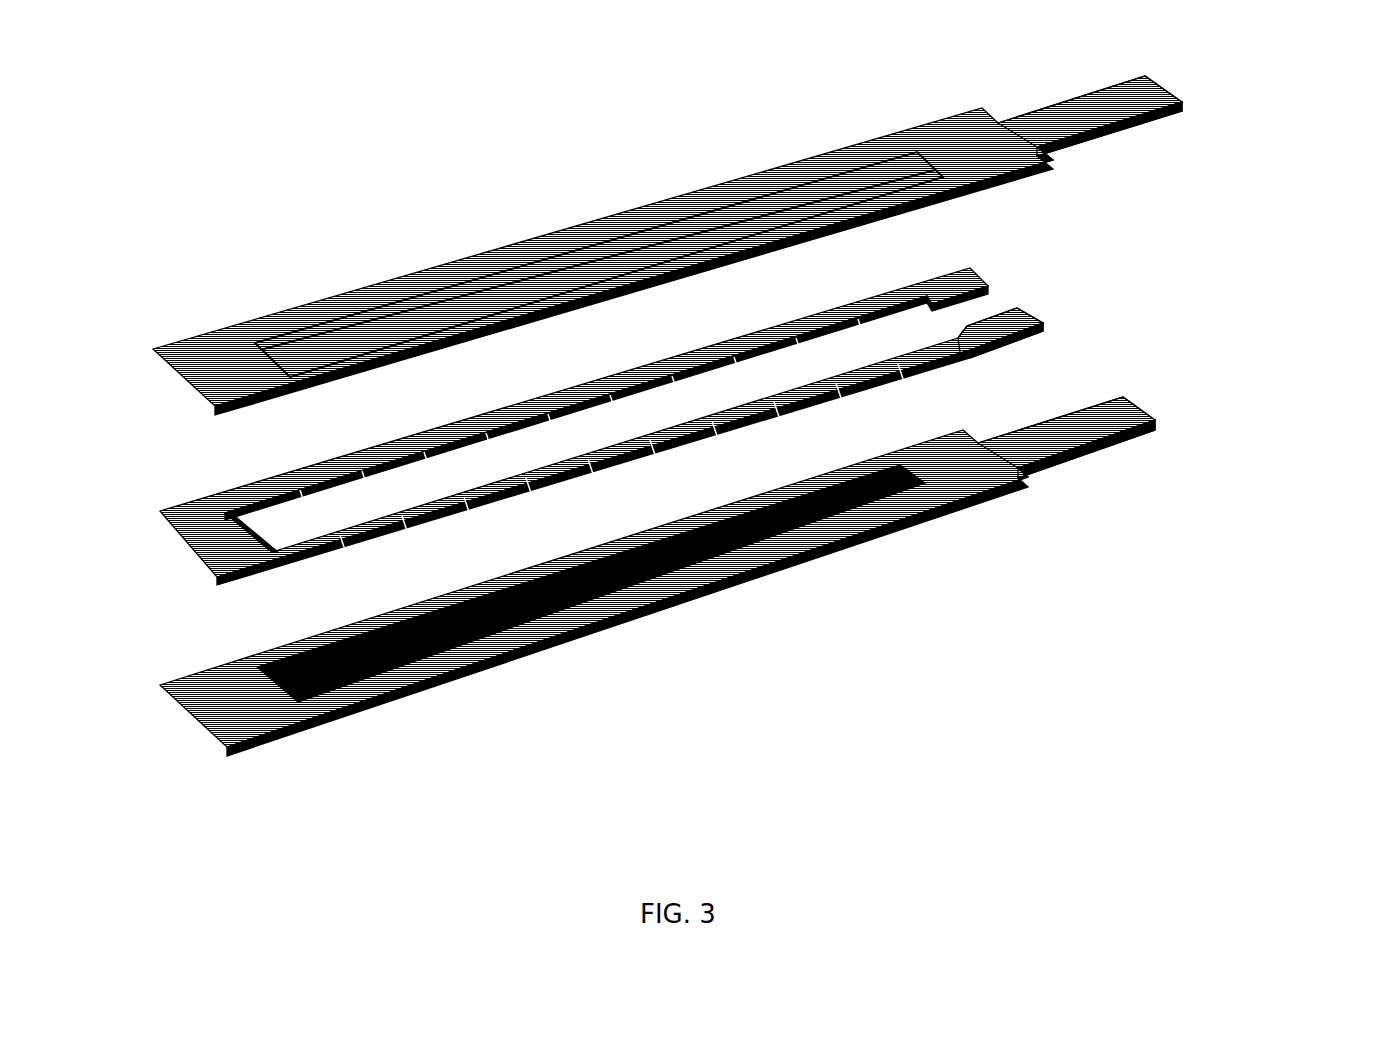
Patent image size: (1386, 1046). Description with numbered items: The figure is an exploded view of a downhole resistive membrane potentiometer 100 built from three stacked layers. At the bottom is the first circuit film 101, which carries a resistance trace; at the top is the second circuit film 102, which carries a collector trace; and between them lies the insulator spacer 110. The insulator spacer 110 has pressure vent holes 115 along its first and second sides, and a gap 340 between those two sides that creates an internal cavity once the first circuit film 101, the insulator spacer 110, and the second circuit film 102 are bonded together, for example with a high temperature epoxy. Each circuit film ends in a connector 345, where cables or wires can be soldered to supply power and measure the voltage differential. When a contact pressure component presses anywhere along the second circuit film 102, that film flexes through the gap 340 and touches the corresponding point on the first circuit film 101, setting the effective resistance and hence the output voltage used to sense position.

The downhole resistive membrane potentiometer 100 is at (162, 115).
The first circuit film 101 is at (220, 762).
The second circuit film 102 is at (455, 290).
The insulator spacer 110 is at (152, 504).
The pressure vent holes 115 is at (962, 335).
The gap 340 is at (703, 388).
The connector 345 is at (1145, 110).